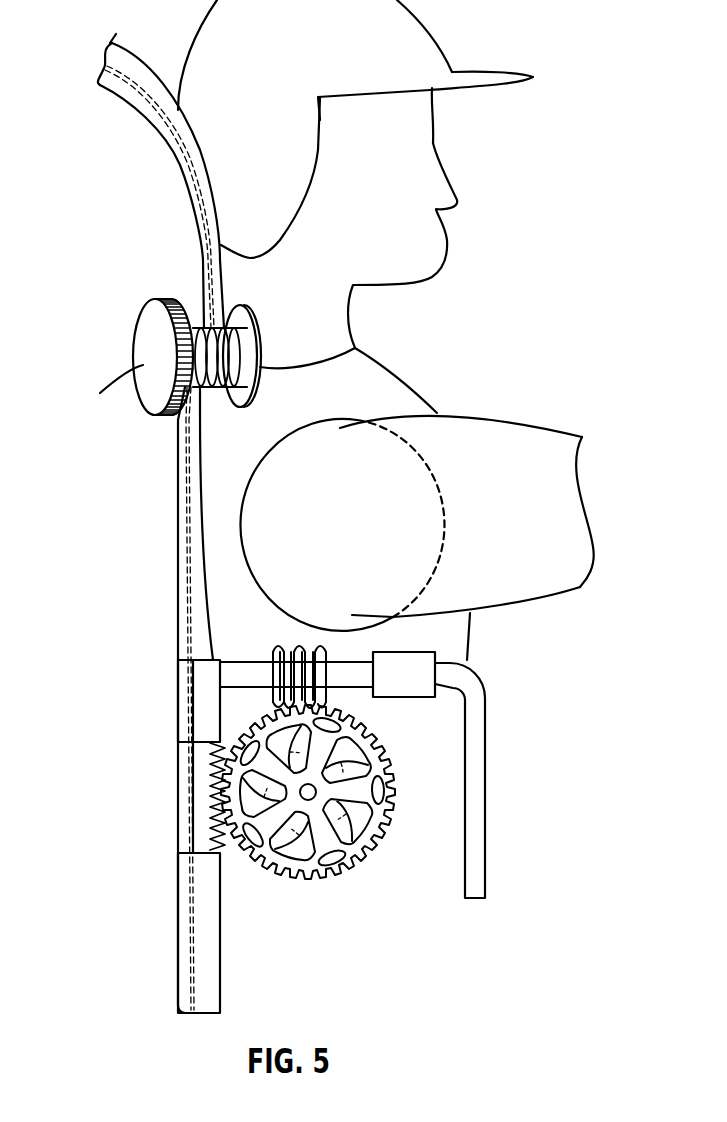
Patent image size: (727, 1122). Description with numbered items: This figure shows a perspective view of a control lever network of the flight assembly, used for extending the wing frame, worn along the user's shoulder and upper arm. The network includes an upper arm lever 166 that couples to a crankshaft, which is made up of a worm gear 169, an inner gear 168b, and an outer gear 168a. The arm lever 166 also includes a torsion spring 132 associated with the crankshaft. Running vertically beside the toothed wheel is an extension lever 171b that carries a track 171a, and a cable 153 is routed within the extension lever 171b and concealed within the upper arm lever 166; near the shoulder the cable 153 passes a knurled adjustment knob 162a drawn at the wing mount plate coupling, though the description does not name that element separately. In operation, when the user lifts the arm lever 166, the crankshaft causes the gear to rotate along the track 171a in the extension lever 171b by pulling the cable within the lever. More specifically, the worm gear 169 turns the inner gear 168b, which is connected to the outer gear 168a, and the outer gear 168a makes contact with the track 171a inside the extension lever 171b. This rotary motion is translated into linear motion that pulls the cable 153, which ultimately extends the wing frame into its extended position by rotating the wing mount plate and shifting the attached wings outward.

The cable 153 is at (172, 127).
The adjustment knob 162a is at (143, 367).
The extension lever 171b is at (183, 505).
The track 171a is at (192, 795).
The worm gear 169 is at (323, 670).
The upper arm lever 166 is at (478, 845).
The torsion spring 132 is at (334, 829).
The outer gear 168a is at (355, 852).
The inner gear 168b is at (290, 852).